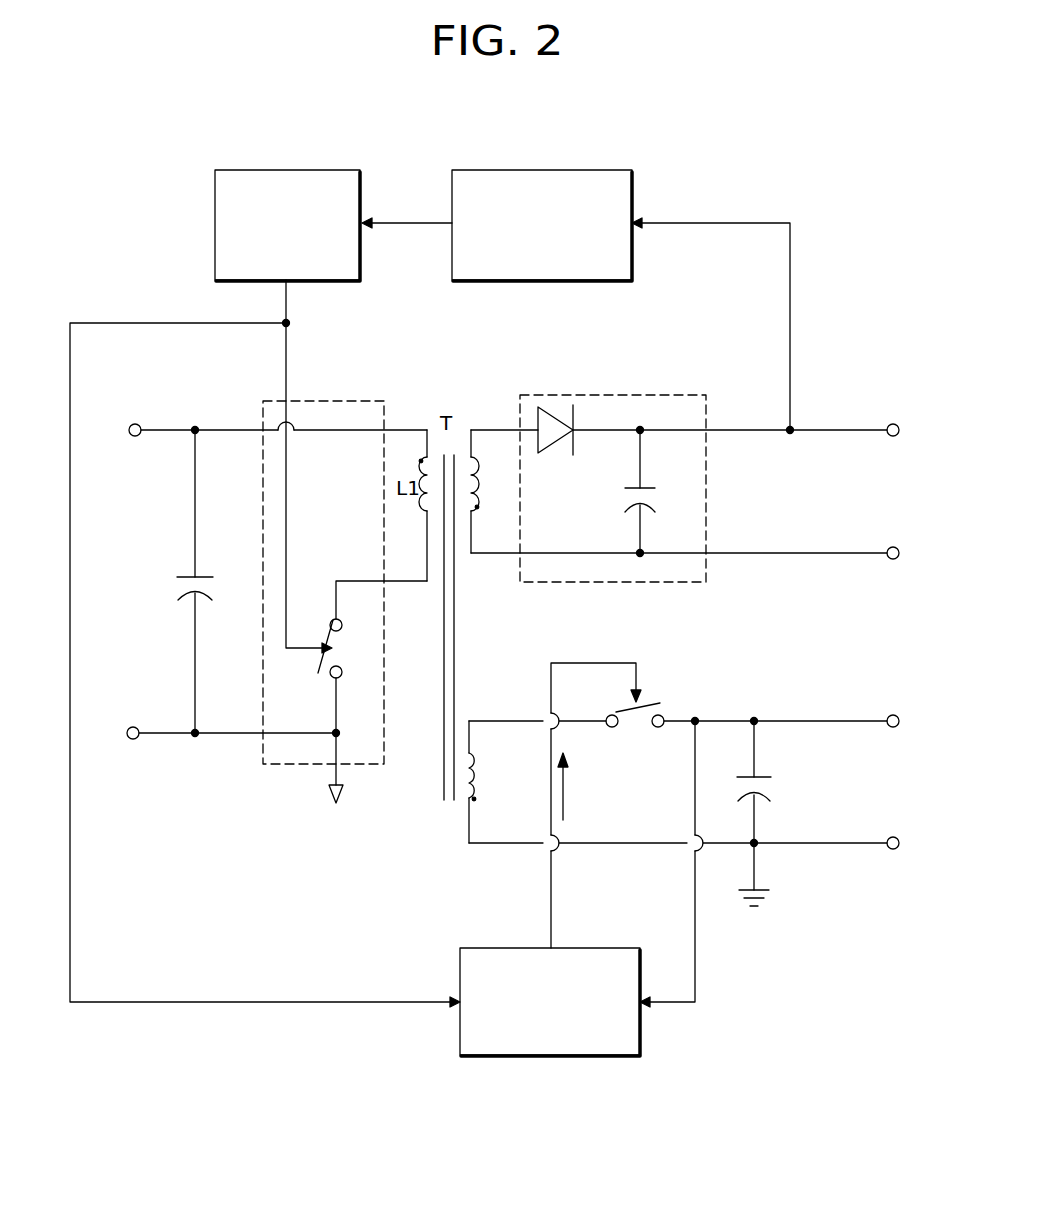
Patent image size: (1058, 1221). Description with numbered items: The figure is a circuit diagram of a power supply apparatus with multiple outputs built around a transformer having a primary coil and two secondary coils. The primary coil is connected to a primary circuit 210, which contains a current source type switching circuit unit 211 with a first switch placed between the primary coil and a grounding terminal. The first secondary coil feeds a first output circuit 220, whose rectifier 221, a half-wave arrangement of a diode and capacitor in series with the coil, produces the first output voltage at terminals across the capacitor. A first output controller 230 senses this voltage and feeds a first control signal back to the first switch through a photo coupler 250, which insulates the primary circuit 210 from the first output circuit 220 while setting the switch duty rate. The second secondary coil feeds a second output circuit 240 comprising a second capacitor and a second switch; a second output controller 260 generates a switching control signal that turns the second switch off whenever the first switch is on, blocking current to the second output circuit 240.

The primary circuit 210 is at (172, 402).
The current source type switching circuit unit 211 is at (337, 400).
The first output circuit 220 is at (672, 456).
The rectifier 221 is at (616, 394).
The first output controller 230 is at (562, 170).
The second output circuit 240 is at (470, 878).
The photo coupler 250 is at (308, 170).
The second output controller 260 is at (570, 947).